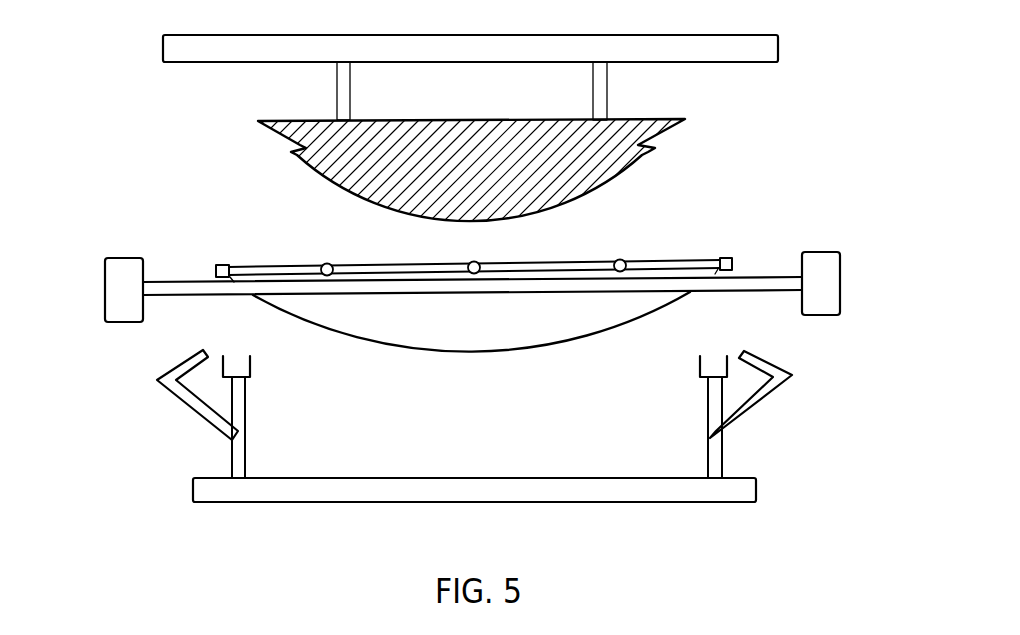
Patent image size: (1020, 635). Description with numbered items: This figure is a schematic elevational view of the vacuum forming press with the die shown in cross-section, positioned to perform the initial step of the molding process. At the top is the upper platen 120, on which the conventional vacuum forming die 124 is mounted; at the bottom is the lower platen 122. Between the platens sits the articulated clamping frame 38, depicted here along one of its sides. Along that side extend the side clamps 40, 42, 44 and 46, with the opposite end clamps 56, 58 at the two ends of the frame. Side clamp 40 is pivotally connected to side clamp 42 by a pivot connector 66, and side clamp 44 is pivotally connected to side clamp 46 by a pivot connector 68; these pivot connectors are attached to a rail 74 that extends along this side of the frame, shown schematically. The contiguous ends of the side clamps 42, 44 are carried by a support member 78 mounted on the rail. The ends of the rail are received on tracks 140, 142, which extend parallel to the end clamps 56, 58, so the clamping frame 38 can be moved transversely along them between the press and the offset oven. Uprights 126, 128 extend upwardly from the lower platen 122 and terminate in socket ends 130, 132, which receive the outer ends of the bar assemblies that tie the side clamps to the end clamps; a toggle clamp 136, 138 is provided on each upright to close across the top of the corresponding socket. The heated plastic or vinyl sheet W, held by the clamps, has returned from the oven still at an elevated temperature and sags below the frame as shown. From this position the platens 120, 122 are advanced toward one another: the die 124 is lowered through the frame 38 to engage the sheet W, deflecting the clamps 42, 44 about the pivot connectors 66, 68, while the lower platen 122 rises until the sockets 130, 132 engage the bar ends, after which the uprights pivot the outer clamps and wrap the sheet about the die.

The upper platen 120 is at (743, 62).
The vacuum forming die 124 is at (647, 158).
The clamping frame 38 is at (203, 208).
The track 140 is at (122, 258).
The track 142 is at (823, 252).
The rail 74 is at (222, 296).
The end clamp 56 is at (217, 264).
The end clamp 58 is at (731, 260).
The side clamp 46 is at (272, 266).
The side clamp 44 is at (400, 264).
The side clamp 42 is at (546, 262).
The side clamp 40 is at (680, 261).
The pivot connector 68 is at (325, 263).
The support member 78 is at (474, 274).
The pivot connector 66 is at (621, 259).
The sheet W is at (530, 353).
The socket end 132 is at (222, 358).
The socket end 130 is at (727, 355).
The toggle clamp 136 is at (182, 397).
The toggle clamp 138 is at (770, 392).
The upright 128 is at (230, 457).
The upright 126 is at (722, 453).
The lower platen 122 is at (757, 482).